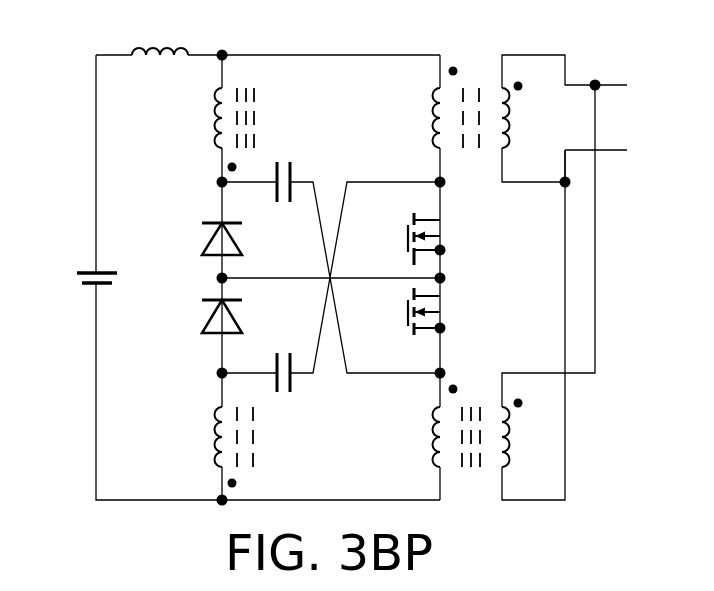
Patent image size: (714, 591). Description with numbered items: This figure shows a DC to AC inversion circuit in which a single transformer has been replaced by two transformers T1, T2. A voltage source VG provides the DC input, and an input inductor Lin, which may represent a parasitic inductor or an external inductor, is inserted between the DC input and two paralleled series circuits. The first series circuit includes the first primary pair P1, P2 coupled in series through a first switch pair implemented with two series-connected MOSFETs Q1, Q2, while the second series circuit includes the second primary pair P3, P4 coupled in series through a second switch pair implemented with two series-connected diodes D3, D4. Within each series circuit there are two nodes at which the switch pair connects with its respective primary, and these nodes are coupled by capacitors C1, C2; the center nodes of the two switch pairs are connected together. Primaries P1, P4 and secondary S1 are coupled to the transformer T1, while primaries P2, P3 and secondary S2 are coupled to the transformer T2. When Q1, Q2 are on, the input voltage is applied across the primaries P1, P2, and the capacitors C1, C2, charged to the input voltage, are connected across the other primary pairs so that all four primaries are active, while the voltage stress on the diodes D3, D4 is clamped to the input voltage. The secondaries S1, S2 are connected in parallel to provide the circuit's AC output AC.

The input inductor Lin is at (160, 31).
The voltage source VG is at (73, 276).
The primary P3 is at (218, 130).
The primary P4 is at (217, 447).
The capacitor C1 is at (285, 162).
The capacitor C2 is at (286, 394).
The diode D4 is at (200, 241).
The diode D3 is at (200, 317).
The MOSFET Q2 is at (402, 239).
The MOSFET Q1 is at (402, 311).
The primary P1 is at (421, 118).
The primary P2 is at (421, 437).
The transformer T1 is at (486, 91).
The transformer T2 is at (486, 410).
The secondary S1 is at (548, 118).
The secondary S2 is at (548, 292).
The AC output AC is at (610, 117).